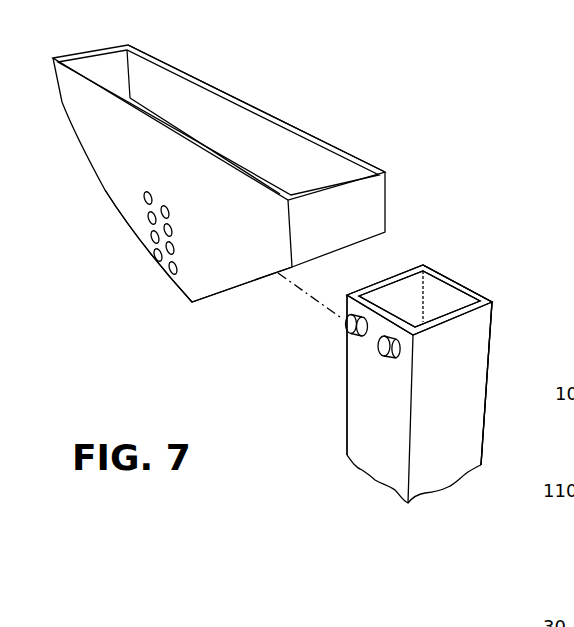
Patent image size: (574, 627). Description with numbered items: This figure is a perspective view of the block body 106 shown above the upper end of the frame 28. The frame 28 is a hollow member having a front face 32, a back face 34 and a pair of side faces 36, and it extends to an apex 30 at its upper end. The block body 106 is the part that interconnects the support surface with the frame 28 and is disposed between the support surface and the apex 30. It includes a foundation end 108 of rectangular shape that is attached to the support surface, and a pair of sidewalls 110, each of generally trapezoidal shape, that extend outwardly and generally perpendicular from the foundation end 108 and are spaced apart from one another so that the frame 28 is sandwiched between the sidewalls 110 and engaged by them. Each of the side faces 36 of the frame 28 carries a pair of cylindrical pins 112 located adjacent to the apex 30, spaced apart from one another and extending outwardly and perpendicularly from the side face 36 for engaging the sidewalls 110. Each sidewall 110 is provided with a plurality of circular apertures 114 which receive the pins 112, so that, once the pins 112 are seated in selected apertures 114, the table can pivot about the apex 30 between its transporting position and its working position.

The frame 28 is at (345, 372).
The apex 30 is at (477, 295).
The front face 32 is at (465, 374).
The back face 34 is at (400, 288).
The side faces 36 is at (447, 298).
The block body 106 is at (104, 190).
The foundation end 108 is at (318, 146).
The sidewalls 110 is at (193, 282).
The pins 112 is at (345, 323).
The apertures 114 is at (153, 237).